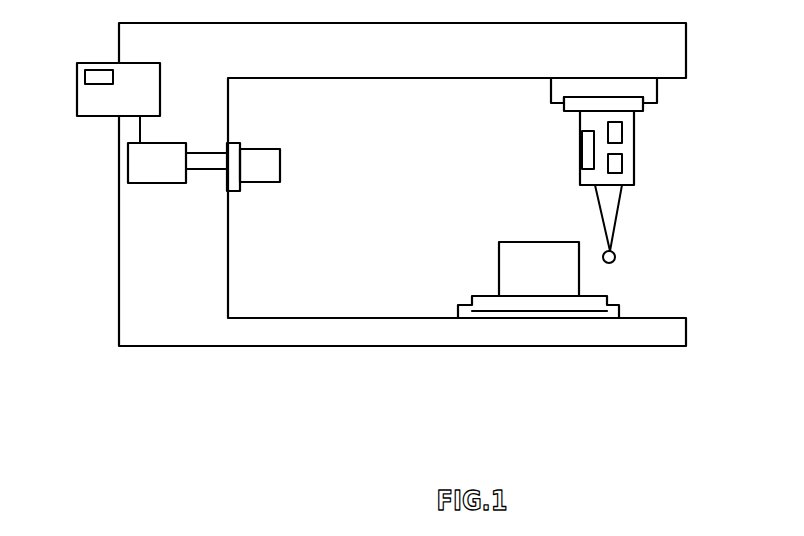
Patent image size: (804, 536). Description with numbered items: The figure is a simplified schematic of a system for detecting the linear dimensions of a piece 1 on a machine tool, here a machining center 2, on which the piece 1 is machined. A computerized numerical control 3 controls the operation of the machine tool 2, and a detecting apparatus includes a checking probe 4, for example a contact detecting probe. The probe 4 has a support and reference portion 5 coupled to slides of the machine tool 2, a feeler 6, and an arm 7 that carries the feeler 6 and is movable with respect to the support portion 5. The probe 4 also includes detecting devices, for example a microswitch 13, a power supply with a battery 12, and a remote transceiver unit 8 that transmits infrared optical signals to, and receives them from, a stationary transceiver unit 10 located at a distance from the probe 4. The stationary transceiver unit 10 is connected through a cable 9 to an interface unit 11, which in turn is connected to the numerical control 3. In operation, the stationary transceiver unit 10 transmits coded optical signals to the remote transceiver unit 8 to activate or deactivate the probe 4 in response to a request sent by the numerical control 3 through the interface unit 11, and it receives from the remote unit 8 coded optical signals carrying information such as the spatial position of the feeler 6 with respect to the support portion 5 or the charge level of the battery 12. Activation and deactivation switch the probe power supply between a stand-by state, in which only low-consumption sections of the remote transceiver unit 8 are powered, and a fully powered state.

The piece 1 is at (513, 273).
The machine tool 2 is at (350, 357).
The computerized numerical control 3 is at (93, 103).
The checking probe 4 is at (586, 172).
The support and reference portion 5 is at (628, 177).
The feeler 6 is at (617, 257).
The arm 7 is at (607, 203).
The remote transceiver unit 8 is at (587, 143).
The cable 9 is at (208, 170).
The stationary transceiver unit 10 is at (258, 167).
The interface unit 11 is at (143, 162).
The battery 12 is at (613, 140).
The microswitch 13 is at (613, 163).